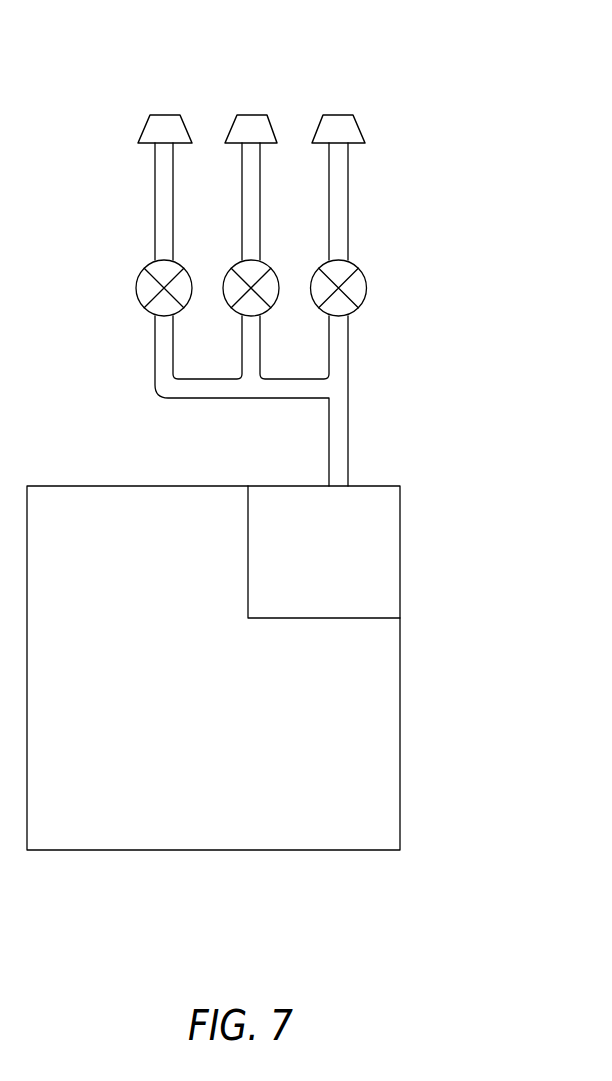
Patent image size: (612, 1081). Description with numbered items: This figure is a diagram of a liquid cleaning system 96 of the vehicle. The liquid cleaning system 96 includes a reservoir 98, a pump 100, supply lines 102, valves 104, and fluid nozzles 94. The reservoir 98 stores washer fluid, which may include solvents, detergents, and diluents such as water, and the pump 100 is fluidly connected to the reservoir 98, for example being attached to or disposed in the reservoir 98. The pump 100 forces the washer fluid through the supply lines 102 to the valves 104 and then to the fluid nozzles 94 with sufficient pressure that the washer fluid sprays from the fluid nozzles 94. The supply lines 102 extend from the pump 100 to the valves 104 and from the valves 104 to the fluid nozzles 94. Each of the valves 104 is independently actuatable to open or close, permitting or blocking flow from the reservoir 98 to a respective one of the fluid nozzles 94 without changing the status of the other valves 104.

The fluid nozzles 94 is at (337, 112).
The liquid cleaning system 96 is at (425, 408).
The reservoir 98 is at (400, 788).
The pump 100 is at (400, 528).
The supply lines 102 is at (173, 164).
The valves 104 is at (318, 265).